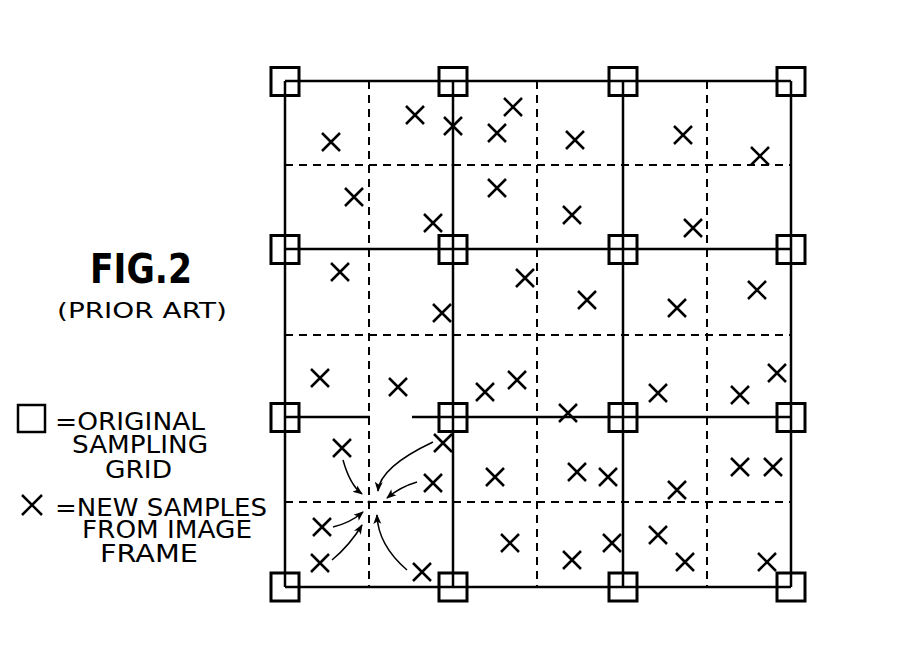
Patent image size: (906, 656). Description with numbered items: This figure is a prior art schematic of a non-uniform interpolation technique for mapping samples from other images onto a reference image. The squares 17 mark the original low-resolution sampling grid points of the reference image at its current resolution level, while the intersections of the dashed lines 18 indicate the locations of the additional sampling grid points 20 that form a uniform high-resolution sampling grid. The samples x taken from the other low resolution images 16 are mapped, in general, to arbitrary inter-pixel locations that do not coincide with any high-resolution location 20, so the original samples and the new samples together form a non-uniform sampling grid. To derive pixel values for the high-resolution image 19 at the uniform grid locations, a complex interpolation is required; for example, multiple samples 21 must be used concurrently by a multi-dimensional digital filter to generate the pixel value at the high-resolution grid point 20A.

The low resolution images 16 is at (493, 339).
The squares 17 is at (285, 68).
The dashed lines 18 is at (370, 108).
The high-resolution image 19 is at (827, 97).
The sampling grid points 20 is at (453, 166).
The high-resolution grid point 20A is at (370, 503).
The samples 21 is at (346, 478).